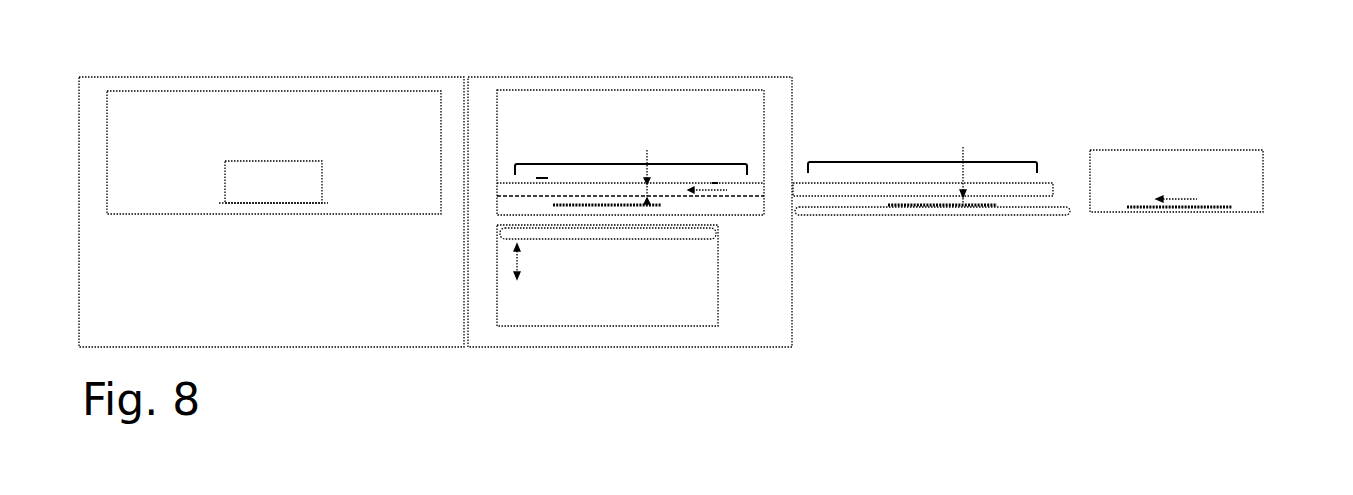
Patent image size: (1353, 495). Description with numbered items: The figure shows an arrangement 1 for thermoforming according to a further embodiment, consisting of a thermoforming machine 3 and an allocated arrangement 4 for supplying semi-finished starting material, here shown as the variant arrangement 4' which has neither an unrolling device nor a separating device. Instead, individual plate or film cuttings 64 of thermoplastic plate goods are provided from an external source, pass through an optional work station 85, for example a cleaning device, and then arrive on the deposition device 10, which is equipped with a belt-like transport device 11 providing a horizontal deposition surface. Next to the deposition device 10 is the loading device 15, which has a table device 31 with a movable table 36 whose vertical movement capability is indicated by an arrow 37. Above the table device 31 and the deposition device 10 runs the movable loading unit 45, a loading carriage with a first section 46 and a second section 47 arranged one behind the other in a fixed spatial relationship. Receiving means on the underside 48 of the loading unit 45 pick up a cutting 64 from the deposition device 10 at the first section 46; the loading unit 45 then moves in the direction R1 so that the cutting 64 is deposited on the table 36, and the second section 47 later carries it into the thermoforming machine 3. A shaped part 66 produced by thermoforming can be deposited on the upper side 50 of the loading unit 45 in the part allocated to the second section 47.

The arrangement for thermoforming 1 is at (1279, 118).
The thermoforming machine 3 is at (180, 63).
The arrangement for supplying a semi-finished product 4 is at (1282, 11).
The arrangement for supplying a semi-finished product 4' is at (1211, 338).
The deposition device 10 is at (877, 217).
The belt-like transport device 11 is at (1033, 216).
The loading device 15 is at (783, 71).
The table device 31 is at (599, 264).
The movable table 36 is at (632, 237).
The arrow 37 is at (520, 260).
The movable loading unit 45 is at (1007, 165).
The first section 46 is at (863, 163).
The second section 47 is at (572, 164).
The underside 48 is at (543, 198).
The upper side 50 is at (542, 184).
The cutting 64 is at (1133, 207).
The shaped part 66 is at (302, 178).
The work station 85 is at (1197, 157).
The direction R1 is at (715, 183).